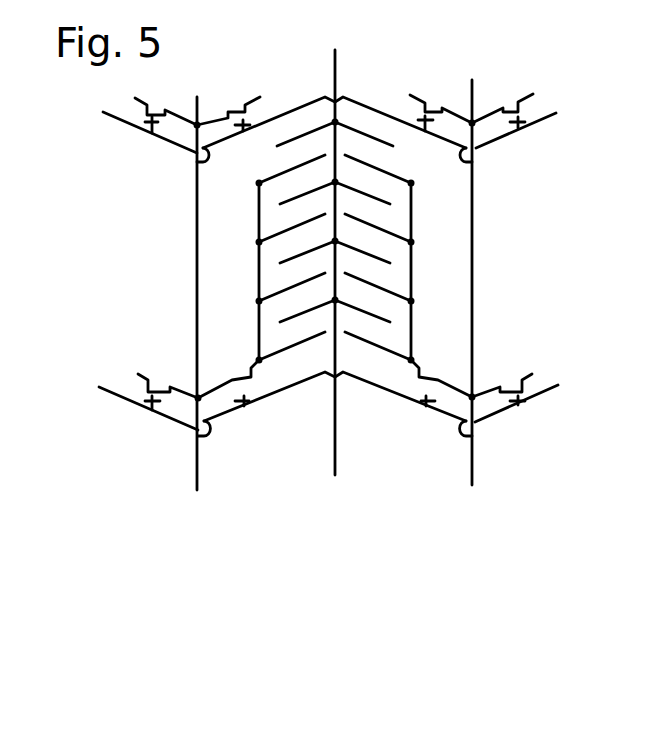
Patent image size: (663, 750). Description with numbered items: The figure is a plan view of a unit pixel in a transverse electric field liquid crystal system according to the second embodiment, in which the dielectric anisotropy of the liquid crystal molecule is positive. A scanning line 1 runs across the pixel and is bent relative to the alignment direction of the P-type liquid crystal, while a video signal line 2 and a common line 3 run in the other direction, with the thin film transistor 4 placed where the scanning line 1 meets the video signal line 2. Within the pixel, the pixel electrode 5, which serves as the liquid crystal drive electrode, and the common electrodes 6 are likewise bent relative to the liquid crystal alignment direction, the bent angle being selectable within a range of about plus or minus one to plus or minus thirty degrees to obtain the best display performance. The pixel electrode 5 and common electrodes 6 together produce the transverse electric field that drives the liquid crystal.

The scanning line 1 is at (120, 398).
The video signal line 2 is at (200, 457).
The common line 3 is at (335, 455).
The thin film transistor 4 is at (255, 393).
The pixel electrode 5 is at (295, 352).
The common electrode 6 is at (298, 138).